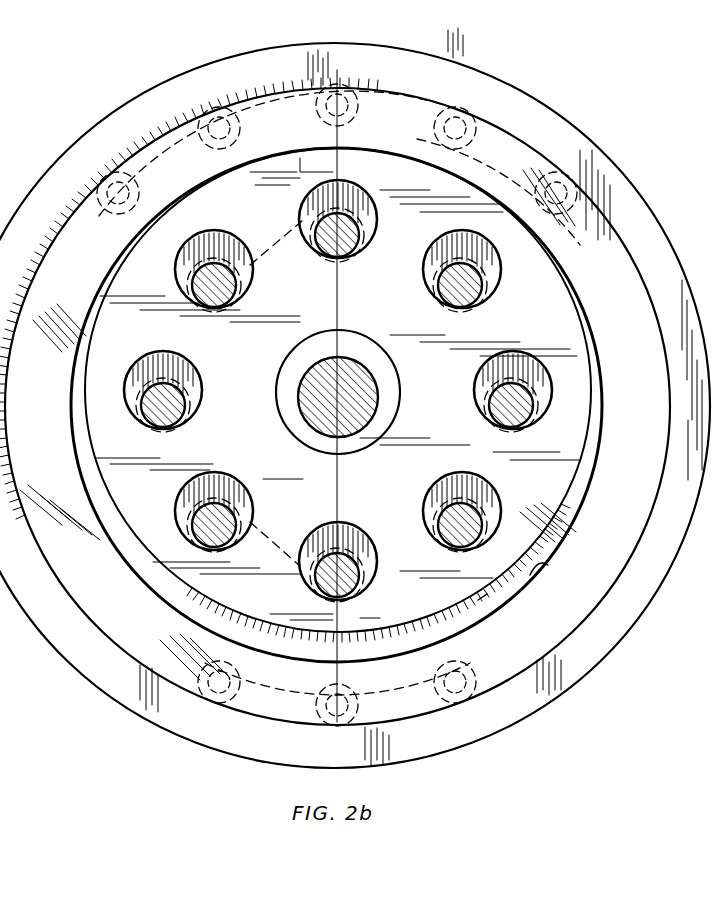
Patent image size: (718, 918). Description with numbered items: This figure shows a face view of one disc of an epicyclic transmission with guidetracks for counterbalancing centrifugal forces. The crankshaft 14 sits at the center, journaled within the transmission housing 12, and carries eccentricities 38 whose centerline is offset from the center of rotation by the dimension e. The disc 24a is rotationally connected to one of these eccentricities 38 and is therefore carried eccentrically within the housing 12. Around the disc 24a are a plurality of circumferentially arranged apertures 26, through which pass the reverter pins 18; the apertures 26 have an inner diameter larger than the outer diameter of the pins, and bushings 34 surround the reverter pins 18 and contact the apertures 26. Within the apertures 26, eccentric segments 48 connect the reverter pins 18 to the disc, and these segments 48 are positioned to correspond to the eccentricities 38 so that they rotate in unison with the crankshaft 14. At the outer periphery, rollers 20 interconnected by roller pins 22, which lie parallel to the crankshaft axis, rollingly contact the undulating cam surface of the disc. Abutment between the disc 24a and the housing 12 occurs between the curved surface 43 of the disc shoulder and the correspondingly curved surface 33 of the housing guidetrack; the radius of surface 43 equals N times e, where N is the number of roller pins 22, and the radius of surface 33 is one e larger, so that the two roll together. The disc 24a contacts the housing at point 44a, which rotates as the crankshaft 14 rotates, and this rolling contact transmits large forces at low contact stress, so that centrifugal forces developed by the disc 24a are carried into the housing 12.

The transmission housing 12 is at (372, 42).
The crankshaft 14 is at (376, 402).
The reverter pins 18 is at (352, 250).
The rollers 20 is at (296, 100).
The roller pins 22 is at (430, 120).
The disc 24a is at (362, 481).
The apertures 26 is at (490, 300).
The curved surface of guidetrack 33 is at (548, 562).
The bushings 34 is at (276, 393).
The eccentricities 38 is at (366, 345).
The curved surface of disc shoulder 43 is at (488, 594).
The contact point 44a is at (338, 152).
The eccentric segments 48 is at (357, 203).